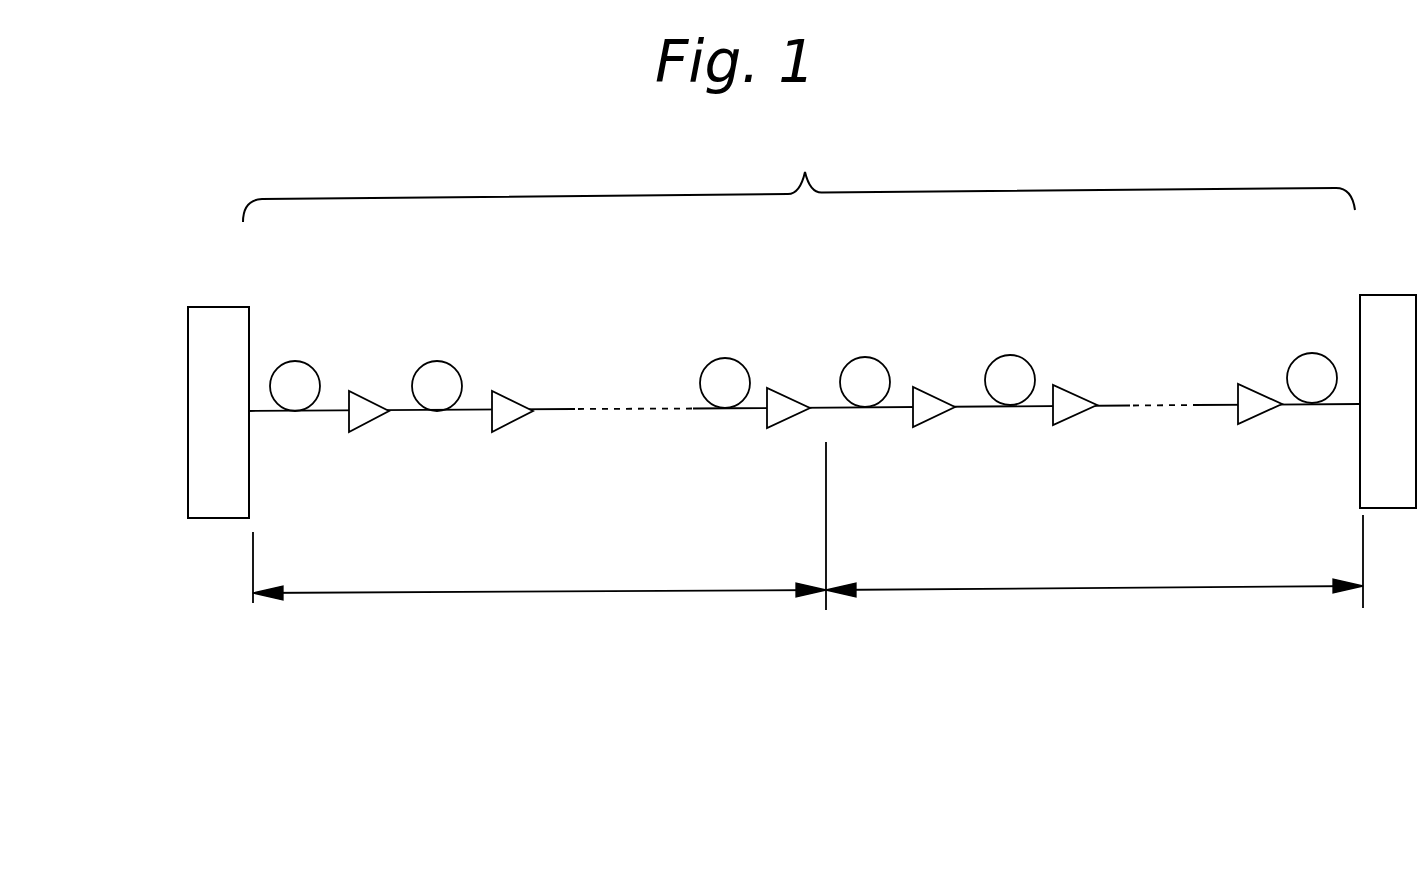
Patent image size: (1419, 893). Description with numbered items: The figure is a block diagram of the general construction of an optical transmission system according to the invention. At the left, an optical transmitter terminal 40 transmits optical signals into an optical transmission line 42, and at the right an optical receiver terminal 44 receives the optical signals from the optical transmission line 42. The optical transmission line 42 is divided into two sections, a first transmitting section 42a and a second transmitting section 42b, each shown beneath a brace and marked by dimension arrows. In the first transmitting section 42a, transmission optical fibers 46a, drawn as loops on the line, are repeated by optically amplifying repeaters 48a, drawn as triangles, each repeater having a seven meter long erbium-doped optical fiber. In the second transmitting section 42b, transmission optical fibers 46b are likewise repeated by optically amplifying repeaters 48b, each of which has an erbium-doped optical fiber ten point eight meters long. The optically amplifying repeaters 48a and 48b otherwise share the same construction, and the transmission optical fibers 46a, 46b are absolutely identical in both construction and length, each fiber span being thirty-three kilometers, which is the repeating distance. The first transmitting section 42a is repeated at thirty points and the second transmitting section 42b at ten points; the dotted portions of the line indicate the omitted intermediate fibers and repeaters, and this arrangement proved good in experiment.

The optical transmitter terminal 40 is at (221, 316).
The optical transmission line 42 is at (799, 175).
The first transmitting section 42a is at (539, 577).
The second transmitting section 42b is at (1094, 573).
The optical receiver terminal 44 is at (1386, 300).
The transmission optical fiber 46a is at (298, 380).
The transmission optical fiber 46b is at (866, 368).
The optically amplifying repeater 48a is at (370, 417).
The optically amplifying repeater 48b is at (935, 415).